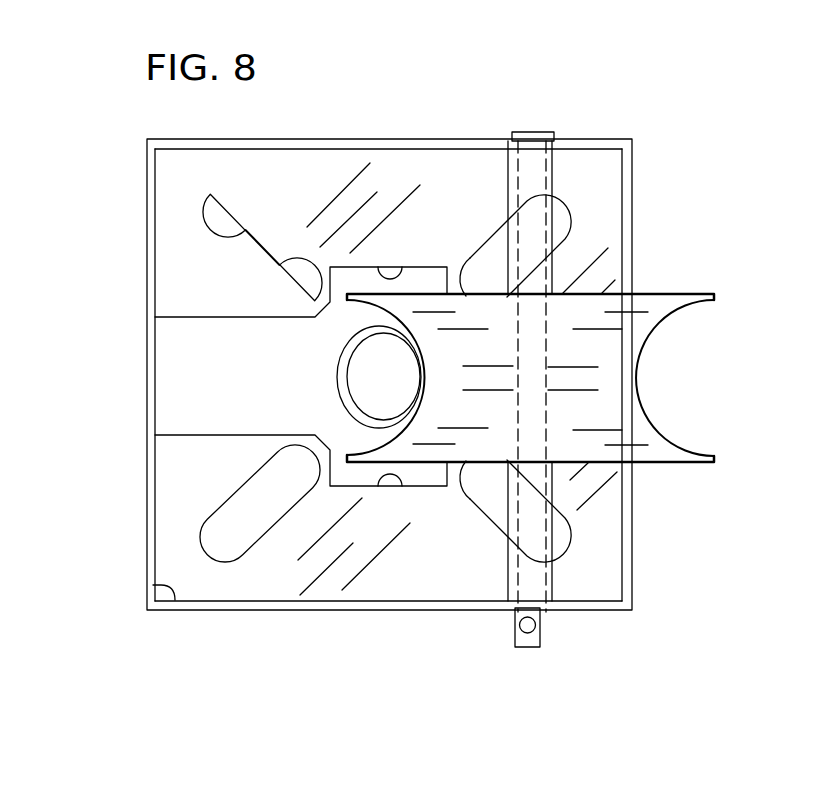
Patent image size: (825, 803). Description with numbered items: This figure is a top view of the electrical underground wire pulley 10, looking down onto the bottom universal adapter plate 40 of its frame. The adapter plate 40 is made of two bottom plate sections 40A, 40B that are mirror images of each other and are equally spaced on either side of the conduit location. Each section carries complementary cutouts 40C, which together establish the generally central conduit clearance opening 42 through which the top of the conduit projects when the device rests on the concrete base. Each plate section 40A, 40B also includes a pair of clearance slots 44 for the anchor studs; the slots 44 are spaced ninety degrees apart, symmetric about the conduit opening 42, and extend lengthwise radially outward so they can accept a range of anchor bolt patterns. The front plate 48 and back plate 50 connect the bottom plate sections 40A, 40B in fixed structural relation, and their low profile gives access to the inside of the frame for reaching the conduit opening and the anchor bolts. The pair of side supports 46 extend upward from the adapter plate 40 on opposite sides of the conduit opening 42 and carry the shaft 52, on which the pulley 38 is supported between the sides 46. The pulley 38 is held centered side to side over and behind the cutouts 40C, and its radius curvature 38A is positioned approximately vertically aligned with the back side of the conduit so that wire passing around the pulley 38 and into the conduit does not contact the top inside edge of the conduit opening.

The electrical underground wire pulley 10 is at (691, 136).
The pulley 38 is at (723, 462).
The radius curvature of the pulley 38A is at (655, 338).
The bottom universal adapter plate 40 is at (610, 263).
The bottom plate section 40A is at (232, 304).
The bottom plate section 40B is at (232, 491).
The cutouts 40C is at (400, 267).
The center clearance opening 42 is at (333, 372).
The clearance slots 44 is at (268, 216).
The side supports 46 is at (193, 139).
The front plate 48 is at (175, 600).
The back plate 50 is at (632, 601).
The shaft 52 is at (547, 212).